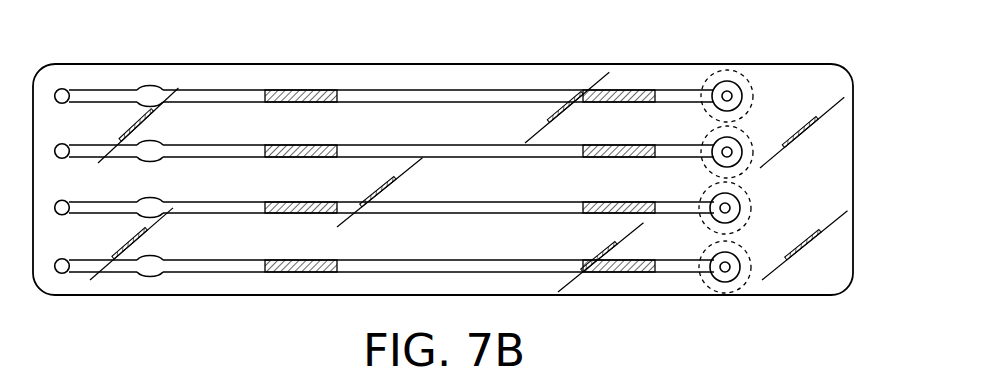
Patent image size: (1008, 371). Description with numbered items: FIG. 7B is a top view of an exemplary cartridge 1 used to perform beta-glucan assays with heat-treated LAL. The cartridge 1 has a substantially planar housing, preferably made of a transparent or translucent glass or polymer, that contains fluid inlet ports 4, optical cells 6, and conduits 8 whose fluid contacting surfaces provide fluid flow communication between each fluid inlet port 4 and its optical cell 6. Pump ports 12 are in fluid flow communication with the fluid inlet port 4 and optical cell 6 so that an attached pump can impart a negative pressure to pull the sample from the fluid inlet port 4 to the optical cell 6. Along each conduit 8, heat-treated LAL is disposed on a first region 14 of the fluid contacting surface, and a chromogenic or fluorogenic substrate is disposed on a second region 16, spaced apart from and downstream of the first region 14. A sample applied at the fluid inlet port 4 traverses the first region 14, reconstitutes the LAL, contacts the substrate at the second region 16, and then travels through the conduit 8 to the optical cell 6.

The cartridge 1 is at (855, 192).
The fluid inlet port 4 is at (733, 139).
The optical cell 6 is at (155, 138).
The conduit 8 is at (462, 100).
The pump port 12 is at (64, 103).
The first region 14 is at (618, 102).
The second region 16 is at (290, 103).